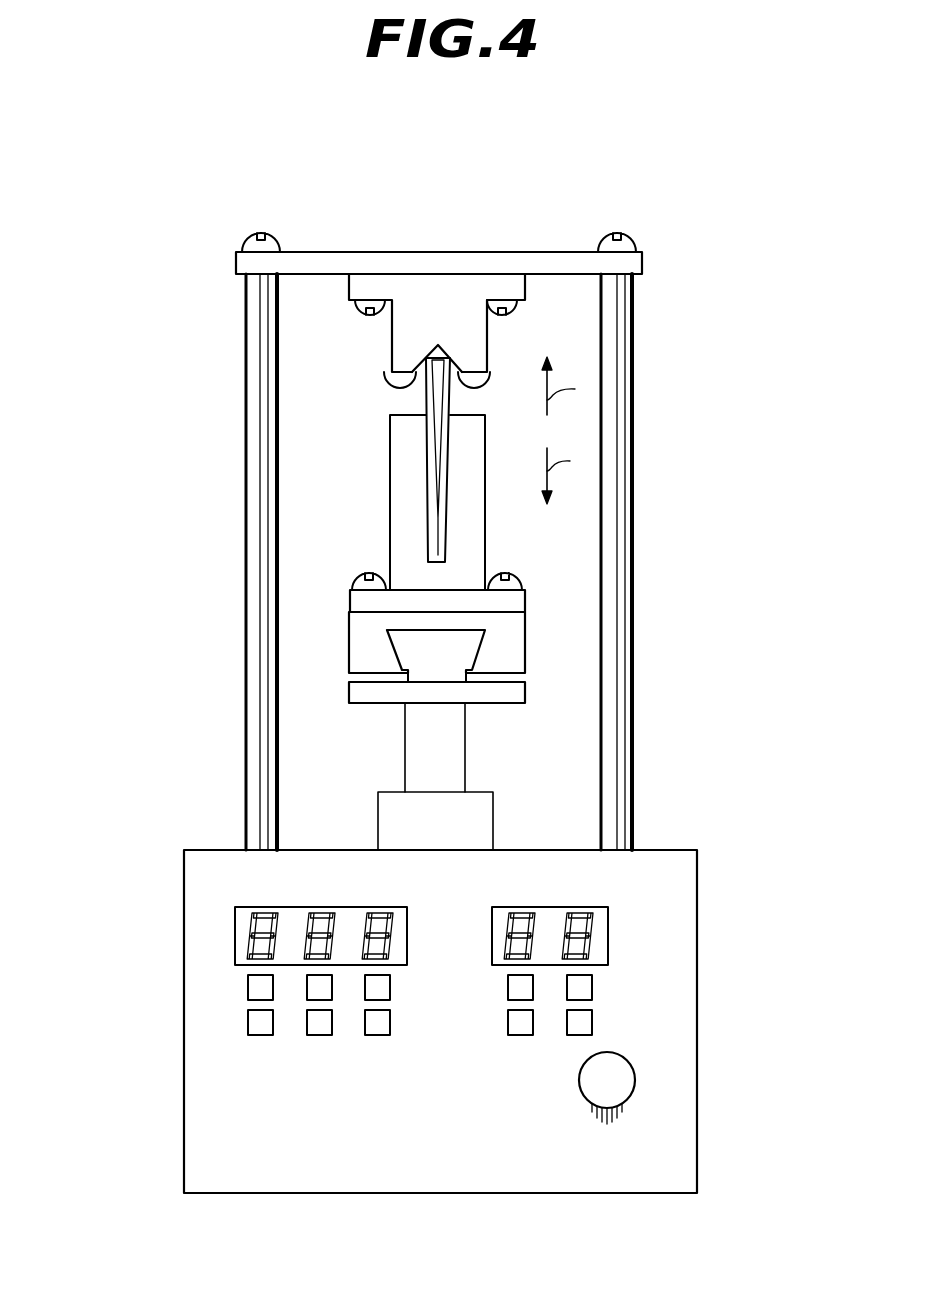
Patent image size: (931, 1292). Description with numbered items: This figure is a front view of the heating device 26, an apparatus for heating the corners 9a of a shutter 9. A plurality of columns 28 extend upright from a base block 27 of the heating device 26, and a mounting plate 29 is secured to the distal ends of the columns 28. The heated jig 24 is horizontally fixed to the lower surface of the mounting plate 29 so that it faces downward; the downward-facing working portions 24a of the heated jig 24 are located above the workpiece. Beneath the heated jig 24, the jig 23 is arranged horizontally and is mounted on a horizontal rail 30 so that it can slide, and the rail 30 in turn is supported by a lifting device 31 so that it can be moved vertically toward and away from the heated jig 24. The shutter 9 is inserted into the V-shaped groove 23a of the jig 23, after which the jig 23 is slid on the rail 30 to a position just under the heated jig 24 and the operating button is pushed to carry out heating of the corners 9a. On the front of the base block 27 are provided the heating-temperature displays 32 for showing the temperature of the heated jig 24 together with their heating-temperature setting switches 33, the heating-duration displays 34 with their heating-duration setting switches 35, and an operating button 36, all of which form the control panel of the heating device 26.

The shutter 9 is at (414, 399).
The corners of the shutter 9a is at (450, 360).
The jig 23 is at (410, 458).
The V-shaped groove 23a is at (432, 517).
The heated jig 24 is at (472, 330).
The projections of upper die 24a is at (415, 388).
The heating device 26 is at (668, 490).
The base block 27 is at (665, 1037).
The columns 28 is at (260, 477).
The mounting plate 29 is at (321, 262).
The horizontal rail 30 is at (438, 650).
The lifting device 31 is at (437, 757).
The display 32 is at (229, 937).
The setting buttons 33 is at (265, 1035).
The heating-duration displays 34 is at (621, 935).
The setting buttons 35 is at (520, 1035).
The control knob 36 is at (627, 1090).